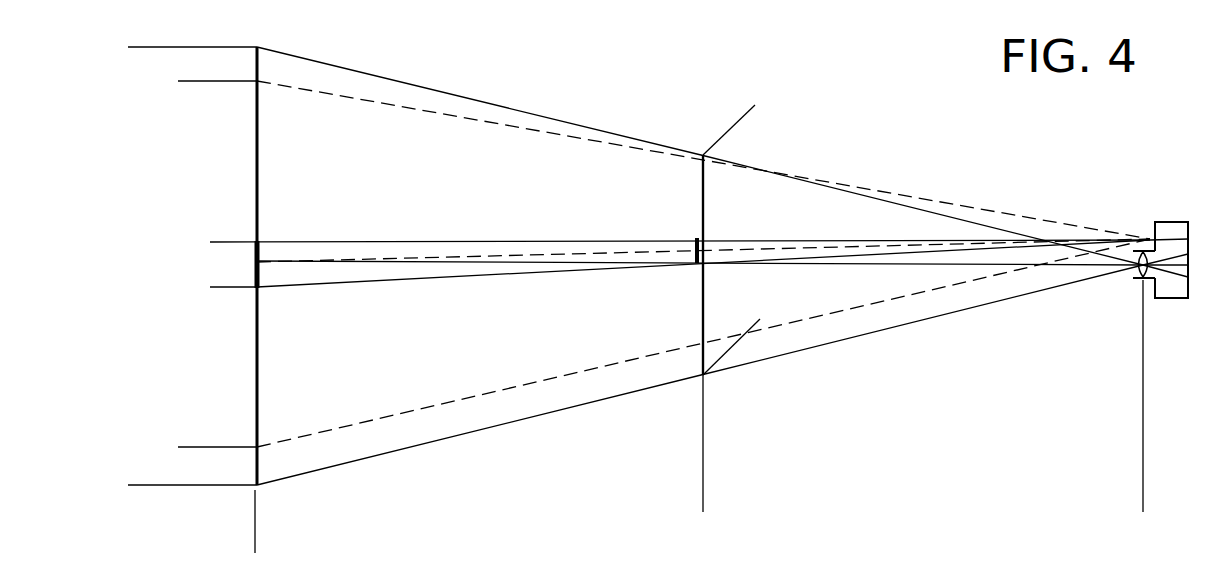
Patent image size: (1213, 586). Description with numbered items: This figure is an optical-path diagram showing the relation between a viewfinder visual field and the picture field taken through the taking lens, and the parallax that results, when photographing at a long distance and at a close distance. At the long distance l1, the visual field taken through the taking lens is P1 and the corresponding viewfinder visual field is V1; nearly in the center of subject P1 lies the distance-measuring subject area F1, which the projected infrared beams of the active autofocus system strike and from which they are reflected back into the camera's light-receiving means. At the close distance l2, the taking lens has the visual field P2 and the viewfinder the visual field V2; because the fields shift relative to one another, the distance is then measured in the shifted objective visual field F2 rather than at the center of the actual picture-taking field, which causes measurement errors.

The visual field taken through the taking lens at long distance P1 is at (138, 47).
The viewfinder visual field V1 is at (187, 81).
The distance-measuring subject area F1 is at (221, 287).
The shifted objective visual field F2 is at (696, 237).
The viewfinder visual field V2 is at (729, 310).
The visual field of the taking lens at close distance P2 is at (752, 109).
The long distance l1 is at (1138, 542).
The close distance l2 is at (703, 498).